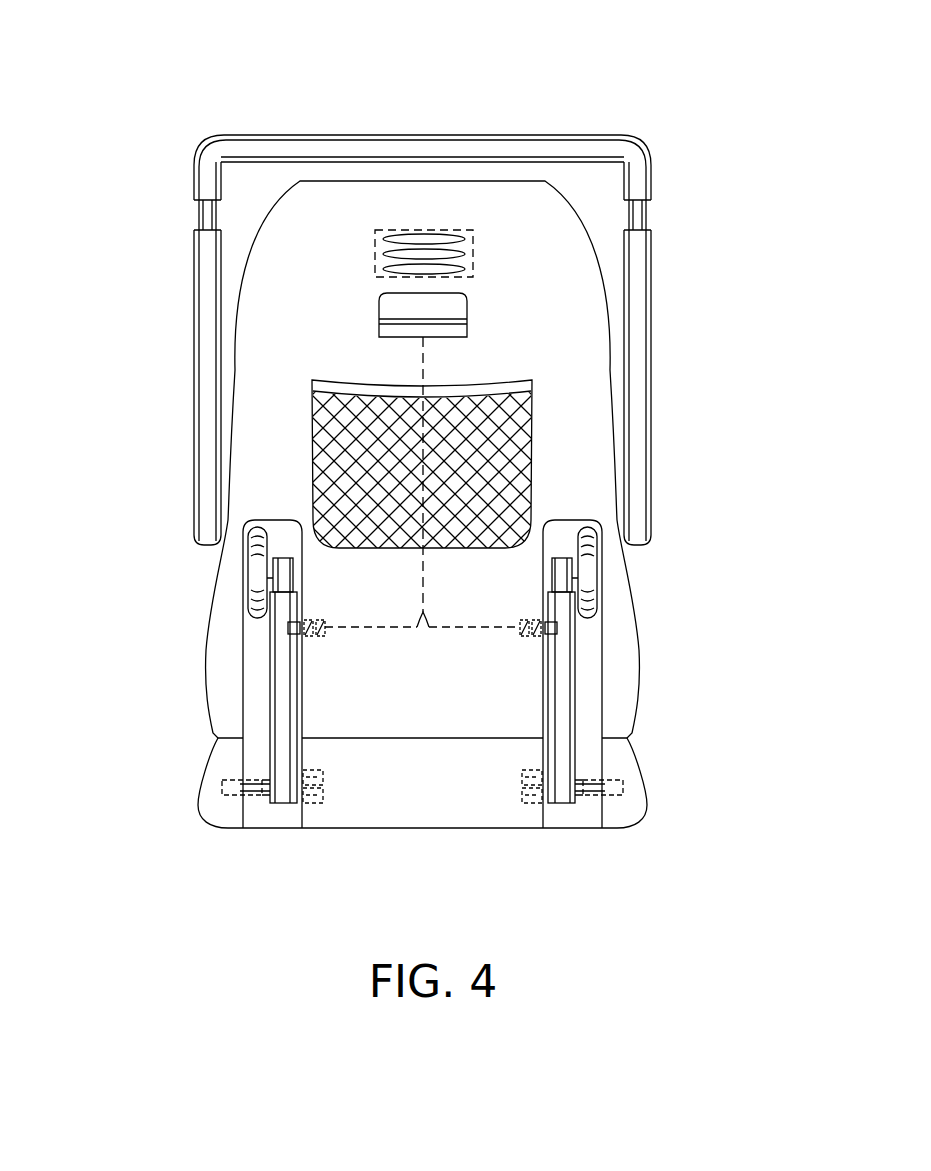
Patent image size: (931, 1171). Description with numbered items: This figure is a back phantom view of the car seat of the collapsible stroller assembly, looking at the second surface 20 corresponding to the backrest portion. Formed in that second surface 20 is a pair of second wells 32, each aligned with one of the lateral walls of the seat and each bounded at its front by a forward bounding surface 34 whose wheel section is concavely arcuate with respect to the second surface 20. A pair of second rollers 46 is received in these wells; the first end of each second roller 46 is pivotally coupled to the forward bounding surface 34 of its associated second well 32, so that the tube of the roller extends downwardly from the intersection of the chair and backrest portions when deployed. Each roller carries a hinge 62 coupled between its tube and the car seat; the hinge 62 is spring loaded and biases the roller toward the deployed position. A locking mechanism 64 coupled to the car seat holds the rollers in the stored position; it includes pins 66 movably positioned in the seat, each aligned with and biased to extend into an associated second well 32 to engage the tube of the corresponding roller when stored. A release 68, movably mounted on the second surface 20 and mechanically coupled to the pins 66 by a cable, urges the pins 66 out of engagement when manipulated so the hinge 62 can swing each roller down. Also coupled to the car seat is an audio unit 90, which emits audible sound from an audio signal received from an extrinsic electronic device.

The second surface 20 is at (558, 398).
The second wells 32 is at (224, 694).
The forward bounding surface 34 is at (596, 705).
The second rollers 46 is at (238, 649).
The hinge 62 is at (323, 803).
The locking mechanism 64 is at (328, 321).
The pins 66 is at (318, 636).
The release 68 is at (428, 293).
The audio unit 90 is at (347, 224).